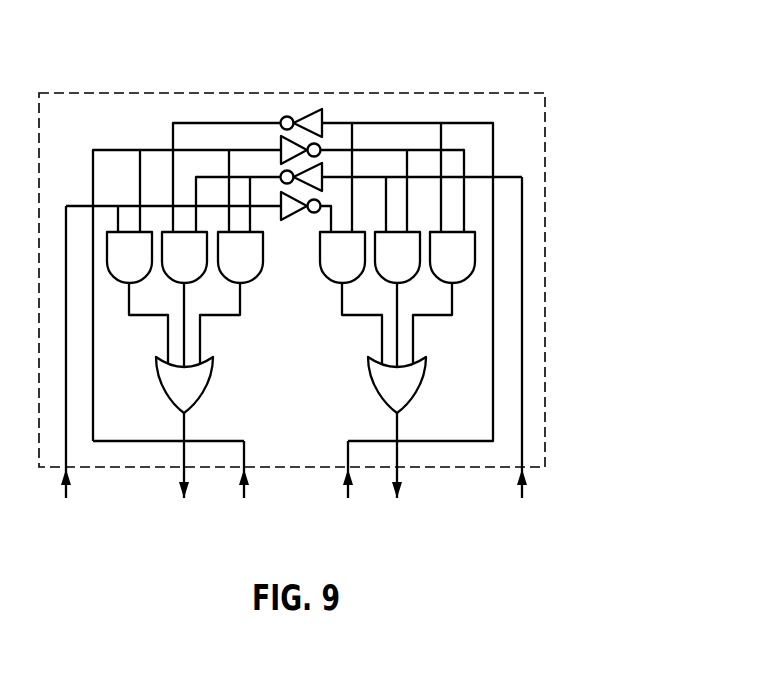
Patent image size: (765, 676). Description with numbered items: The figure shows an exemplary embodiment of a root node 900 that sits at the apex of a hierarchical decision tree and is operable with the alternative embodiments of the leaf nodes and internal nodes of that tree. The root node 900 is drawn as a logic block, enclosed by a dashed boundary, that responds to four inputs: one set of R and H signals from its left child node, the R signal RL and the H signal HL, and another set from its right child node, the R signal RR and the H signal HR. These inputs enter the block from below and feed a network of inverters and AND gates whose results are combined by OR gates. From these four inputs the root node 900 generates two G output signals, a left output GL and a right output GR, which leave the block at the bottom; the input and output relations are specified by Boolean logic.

The root node 900 is at (626, 81).
The H signal from left child node HL is at (71, 372).
The left G output signal GL is at (182, 476).
The R signal from left child node RL is at (245, 490).
The H signal from right child node HR is at (349, 490).
The right G output signal GR is at (398, 476).
The R signal from right child node RR is at (523, 358).